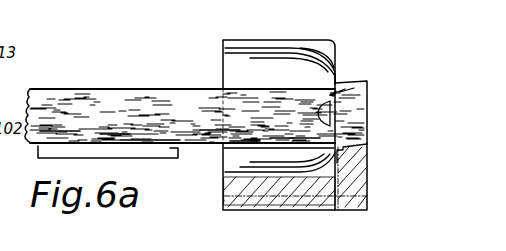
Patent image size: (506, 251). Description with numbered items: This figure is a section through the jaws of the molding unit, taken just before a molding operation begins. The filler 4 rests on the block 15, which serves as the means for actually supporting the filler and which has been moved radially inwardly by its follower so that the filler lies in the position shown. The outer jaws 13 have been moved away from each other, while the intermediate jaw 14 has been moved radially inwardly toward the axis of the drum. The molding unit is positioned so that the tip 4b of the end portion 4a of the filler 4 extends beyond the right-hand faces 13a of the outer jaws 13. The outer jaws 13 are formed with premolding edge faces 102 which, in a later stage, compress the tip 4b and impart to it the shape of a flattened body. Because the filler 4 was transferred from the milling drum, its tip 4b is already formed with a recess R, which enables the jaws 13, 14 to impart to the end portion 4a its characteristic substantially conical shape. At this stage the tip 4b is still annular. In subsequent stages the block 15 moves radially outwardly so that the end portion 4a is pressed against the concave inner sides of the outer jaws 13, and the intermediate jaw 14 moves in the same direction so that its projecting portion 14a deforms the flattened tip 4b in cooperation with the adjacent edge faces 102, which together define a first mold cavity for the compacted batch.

The filler 4 is at (112, 85).
The end portion 4a is at (246, 100).
The tip 4b is at (352, 103).
The outer jaws 13 is at (307, 39).
The right-hand faces 13a is at (337, 63).
The premolding edge faces 102 is at (337, 80).
The recess R is at (368, 117).
The intermediate jaw 14 is at (330, 205).
The projecting portion 14a is at (363, 179).
The block 15 is at (116, 160).